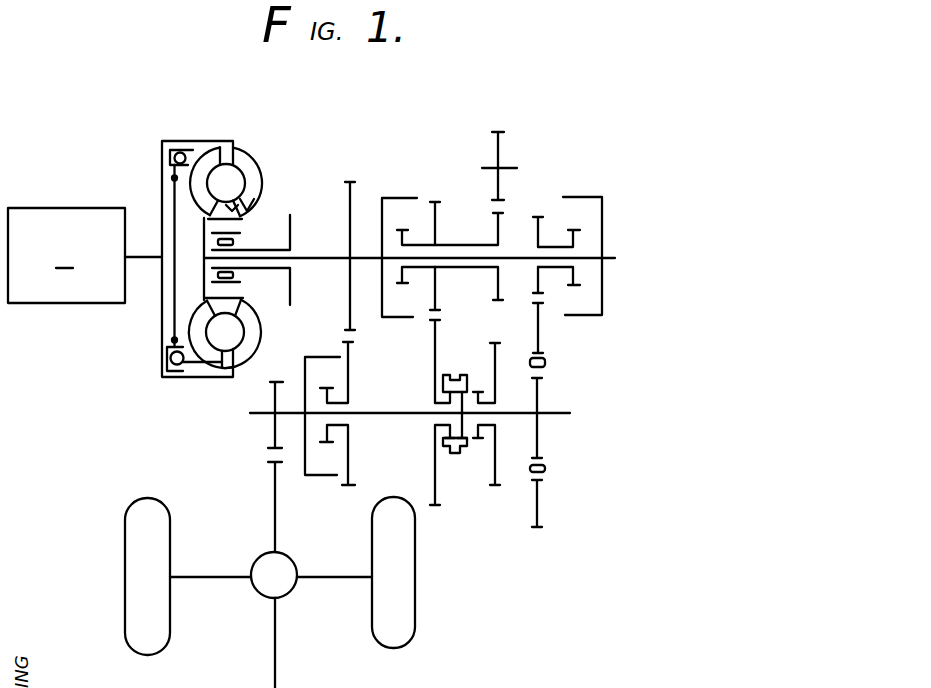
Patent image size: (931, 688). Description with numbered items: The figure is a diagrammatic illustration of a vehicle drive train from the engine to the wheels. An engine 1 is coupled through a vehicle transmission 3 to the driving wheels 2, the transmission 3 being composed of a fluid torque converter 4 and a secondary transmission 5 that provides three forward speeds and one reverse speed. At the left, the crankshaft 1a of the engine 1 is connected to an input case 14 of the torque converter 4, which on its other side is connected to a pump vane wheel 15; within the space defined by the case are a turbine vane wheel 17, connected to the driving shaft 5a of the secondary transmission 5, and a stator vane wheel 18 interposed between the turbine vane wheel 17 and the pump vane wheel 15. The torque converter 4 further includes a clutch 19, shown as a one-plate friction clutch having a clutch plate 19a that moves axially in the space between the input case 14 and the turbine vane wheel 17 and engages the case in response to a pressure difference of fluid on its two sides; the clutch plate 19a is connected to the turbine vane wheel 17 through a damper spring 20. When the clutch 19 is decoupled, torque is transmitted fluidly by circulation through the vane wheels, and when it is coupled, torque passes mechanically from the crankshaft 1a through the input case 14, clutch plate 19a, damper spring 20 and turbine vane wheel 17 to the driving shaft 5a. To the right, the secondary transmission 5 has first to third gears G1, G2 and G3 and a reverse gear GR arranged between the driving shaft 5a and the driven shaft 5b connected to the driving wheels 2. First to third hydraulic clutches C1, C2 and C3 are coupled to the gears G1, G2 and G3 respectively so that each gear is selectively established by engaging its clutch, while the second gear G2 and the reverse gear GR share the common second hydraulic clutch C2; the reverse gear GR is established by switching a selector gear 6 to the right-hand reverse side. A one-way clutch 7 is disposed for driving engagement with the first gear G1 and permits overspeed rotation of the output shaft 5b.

The engine 1 is at (66, 255).
The crankshaft 1a is at (143, 260).
The driving wheels 2 is at (157, 623).
The vehicle transmission 3 is at (426, 161).
The fluid torque converter 4 is at (220, 134).
The secondary transmission 5 is at (470, 176).
The driving shaft 5a is at (323, 263).
The driven shaft 5b is at (402, 417).
The selector gear 6 is at (463, 455).
The one-way clutch 7 is at (545, 363).
The input case 14 is at (162, 327).
The pump vane wheel 15 is at (247, 167).
The turbine vane wheel 17 is at (197, 185).
The stator vane wheel 18 is at (250, 200).
The clutch 19 is at (170, 157).
The clutch plate 19a is at (173, 237).
The damper spring 20 is at (180, 141).
The first gear G1 is at (543, 205).
The second gear G2 is at (438, 196).
The third gear G3 is at (350, 180).
The reverse gear GR is at (504, 128).
The first hydraulic clutch C1 is at (585, 195).
The second hydraulic clutch C2 is at (395, 318).
The third hydraulic clutch C3 is at (320, 477).